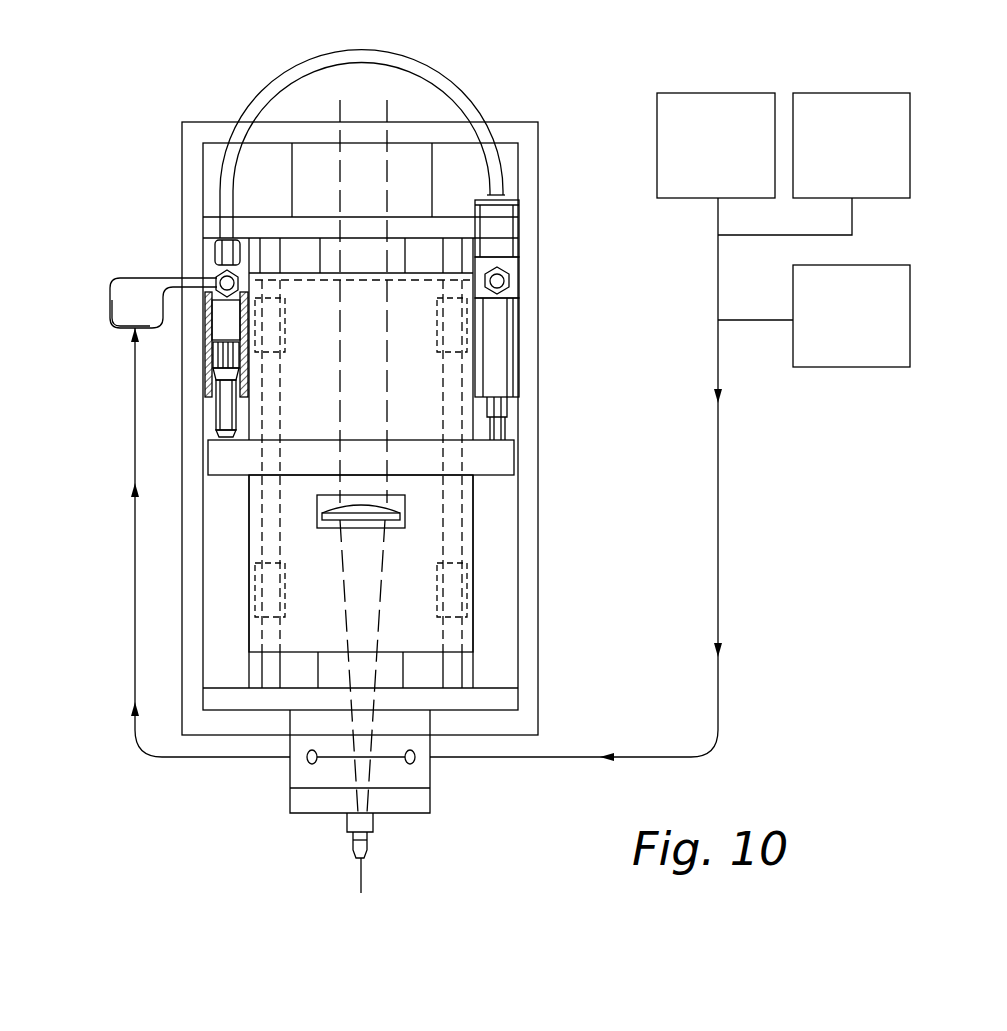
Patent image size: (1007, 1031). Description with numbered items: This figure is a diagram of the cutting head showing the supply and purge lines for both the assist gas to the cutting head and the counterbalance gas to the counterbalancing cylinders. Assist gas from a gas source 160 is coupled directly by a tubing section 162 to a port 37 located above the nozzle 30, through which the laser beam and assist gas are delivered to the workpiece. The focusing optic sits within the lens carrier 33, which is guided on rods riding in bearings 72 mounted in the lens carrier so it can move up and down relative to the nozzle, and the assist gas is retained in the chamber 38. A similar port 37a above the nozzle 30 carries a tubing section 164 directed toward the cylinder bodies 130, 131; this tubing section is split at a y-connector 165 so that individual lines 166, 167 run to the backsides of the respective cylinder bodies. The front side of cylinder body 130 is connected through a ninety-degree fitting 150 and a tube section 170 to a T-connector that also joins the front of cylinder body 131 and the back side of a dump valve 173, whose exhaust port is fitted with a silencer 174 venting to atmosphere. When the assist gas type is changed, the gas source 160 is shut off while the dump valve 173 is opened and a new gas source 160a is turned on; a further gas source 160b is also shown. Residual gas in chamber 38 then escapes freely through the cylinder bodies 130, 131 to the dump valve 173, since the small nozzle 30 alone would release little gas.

The tube section 170 is at (342, 58).
The ninety-degree fitting 150 is at (212, 290).
The individual line 166 is at (133, 276).
The y-connector 165 is at (135, 330).
The individual line 167 is at (160, 330).
The cylinder body 130 is at (210, 388).
The bearings 72 is at (287, 325).
The dump valve 173 is at (500, 233).
The silencer 174 is at (507, 287).
The cylinder body 131 is at (500, 347).
The lens carrier 33 is at (472, 493).
The chamber 38 is at (403, 618).
The port 37a is at (310, 762).
The port 37 is at (410, 762).
The nozzle 30 is at (353, 862).
The tubing section 164 is at (135, 720).
The tubing section 162 is at (715, 587).
The gas source 160 is at (686, 93).
The new gas source 160a is at (822, 93).
The gas source 3 160b is at (822, 367).